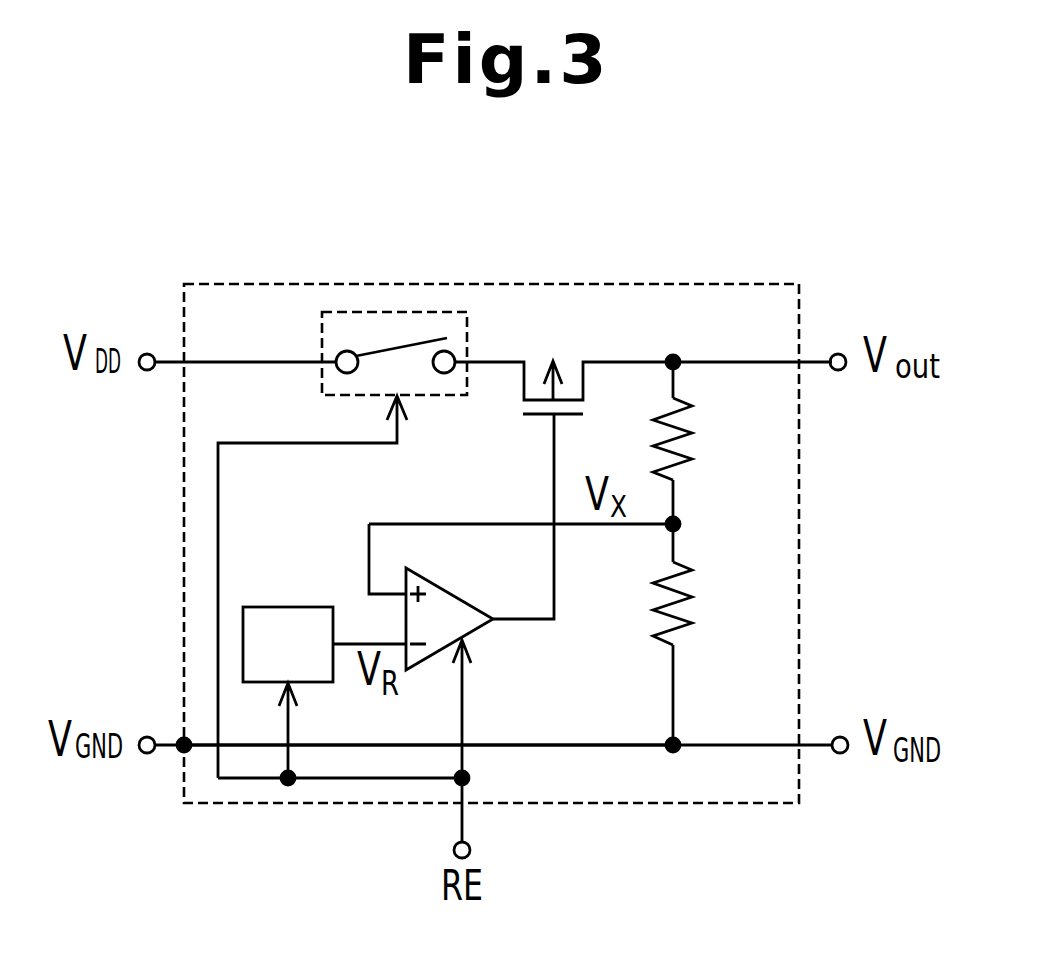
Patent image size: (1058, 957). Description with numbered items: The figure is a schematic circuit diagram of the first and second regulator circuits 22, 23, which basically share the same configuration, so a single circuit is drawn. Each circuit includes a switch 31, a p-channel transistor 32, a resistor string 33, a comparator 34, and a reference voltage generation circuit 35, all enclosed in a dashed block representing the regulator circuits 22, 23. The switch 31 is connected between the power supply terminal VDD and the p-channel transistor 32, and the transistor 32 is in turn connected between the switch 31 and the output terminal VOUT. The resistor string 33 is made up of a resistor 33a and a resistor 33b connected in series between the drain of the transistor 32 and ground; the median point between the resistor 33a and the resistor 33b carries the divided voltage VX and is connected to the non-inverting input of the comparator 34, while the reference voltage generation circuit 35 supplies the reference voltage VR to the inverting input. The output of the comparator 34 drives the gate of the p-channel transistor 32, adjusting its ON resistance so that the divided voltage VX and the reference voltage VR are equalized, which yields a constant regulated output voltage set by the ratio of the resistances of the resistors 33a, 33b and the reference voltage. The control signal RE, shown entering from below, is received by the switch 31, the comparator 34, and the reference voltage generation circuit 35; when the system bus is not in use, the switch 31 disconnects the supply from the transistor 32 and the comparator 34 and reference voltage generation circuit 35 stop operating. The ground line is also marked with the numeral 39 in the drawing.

The first regulator circuit 22 is at (491, 499).
The second regulator circuit 23 is at (623, 285).
The switch 31 is at (398, 312).
The p-channel transistor 32 is at (523, 378).
The resistor string 33 is at (669, 541).
The resistor 33a is at (660, 437).
The resistor 33b is at (656, 612).
The comparator 34 is at (447, 592).
The reference voltage generation circuit 35 is at (290, 607).
The ground line 39 is at (588, 748).